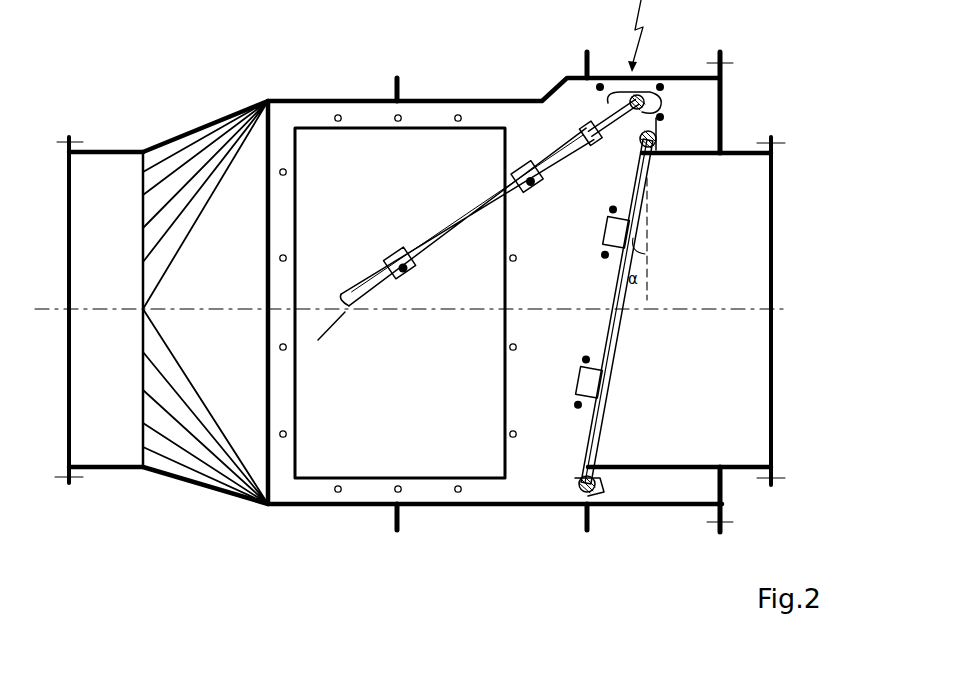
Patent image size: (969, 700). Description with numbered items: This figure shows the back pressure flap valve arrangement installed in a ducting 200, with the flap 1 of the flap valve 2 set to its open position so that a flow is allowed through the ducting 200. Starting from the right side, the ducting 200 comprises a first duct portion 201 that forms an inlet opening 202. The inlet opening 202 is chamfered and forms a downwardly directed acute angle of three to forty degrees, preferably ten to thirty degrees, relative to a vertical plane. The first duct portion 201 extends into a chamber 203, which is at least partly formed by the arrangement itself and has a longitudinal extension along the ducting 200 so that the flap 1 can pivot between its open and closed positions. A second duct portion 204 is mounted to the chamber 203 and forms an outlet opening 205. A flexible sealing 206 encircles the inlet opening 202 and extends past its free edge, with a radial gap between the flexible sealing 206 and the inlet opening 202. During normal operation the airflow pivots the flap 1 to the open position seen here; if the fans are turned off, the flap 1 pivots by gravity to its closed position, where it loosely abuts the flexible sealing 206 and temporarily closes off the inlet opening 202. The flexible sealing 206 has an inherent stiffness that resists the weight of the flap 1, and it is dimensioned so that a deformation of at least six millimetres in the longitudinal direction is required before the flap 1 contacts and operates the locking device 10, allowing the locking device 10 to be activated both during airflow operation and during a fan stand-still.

The flap 1 is at (460, 172).
The flap valve 2 is at (565, 125).
The locking device 10 is at (598, 388).
The ducting 200 is at (500, 269).
The first duct portion 201 is at (692, 268).
The inlet opening 202 is at (706, 119).
The chamber 203 is at (398, 253).
The second duct portion 204 is at (199, 273).
The outlet opening 205 is at (99, 258).
The flexible sealing 206 is at (677, 75).